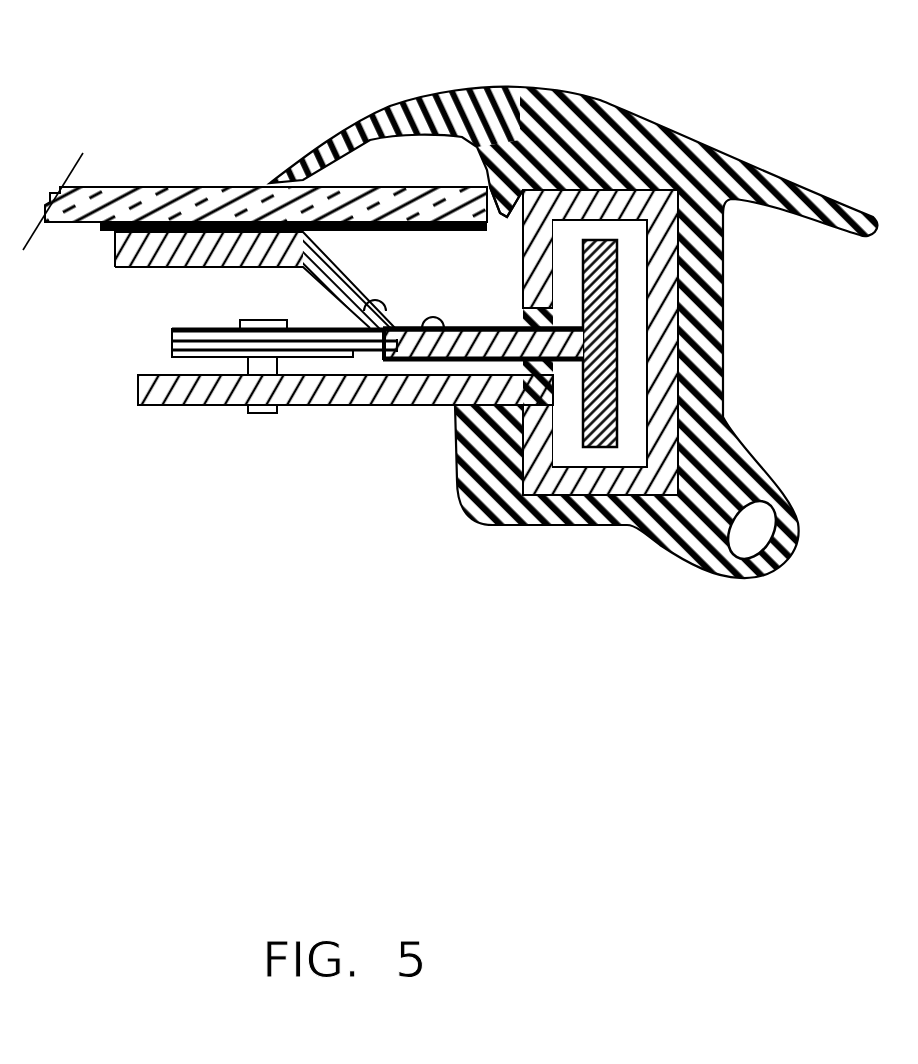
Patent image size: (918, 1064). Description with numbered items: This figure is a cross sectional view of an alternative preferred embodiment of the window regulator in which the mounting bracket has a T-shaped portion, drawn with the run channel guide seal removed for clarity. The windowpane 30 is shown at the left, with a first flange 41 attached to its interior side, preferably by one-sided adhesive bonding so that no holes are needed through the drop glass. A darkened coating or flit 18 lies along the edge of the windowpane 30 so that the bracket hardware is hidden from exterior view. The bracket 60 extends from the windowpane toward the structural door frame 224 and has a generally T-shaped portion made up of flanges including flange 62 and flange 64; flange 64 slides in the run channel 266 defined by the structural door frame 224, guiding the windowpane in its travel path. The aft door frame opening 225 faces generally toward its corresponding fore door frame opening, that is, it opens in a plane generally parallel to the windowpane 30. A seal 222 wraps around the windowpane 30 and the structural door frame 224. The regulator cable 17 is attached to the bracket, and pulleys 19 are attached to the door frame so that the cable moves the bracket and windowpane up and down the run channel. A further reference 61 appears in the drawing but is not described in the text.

The cable 17 is at (362, 338).
The flit 18 is at (247, 200).
The pulleys 19 is at (138, 393).
The windowpane 30 is at (130, 186).
The first flange 41 is at (123, 268).
The bracket 60 is at (507, 317).
The rivet 61 is at (378, 352).
The flange 62 is at (433, 360).
The flange 64 is at (613, 280).
The seal 222 is at (640, 110).
The structural door frame 224 is at (683, 382).
The aft door frame opening 225 is at (472, 325).
The run channel 266 is at (625, 457).